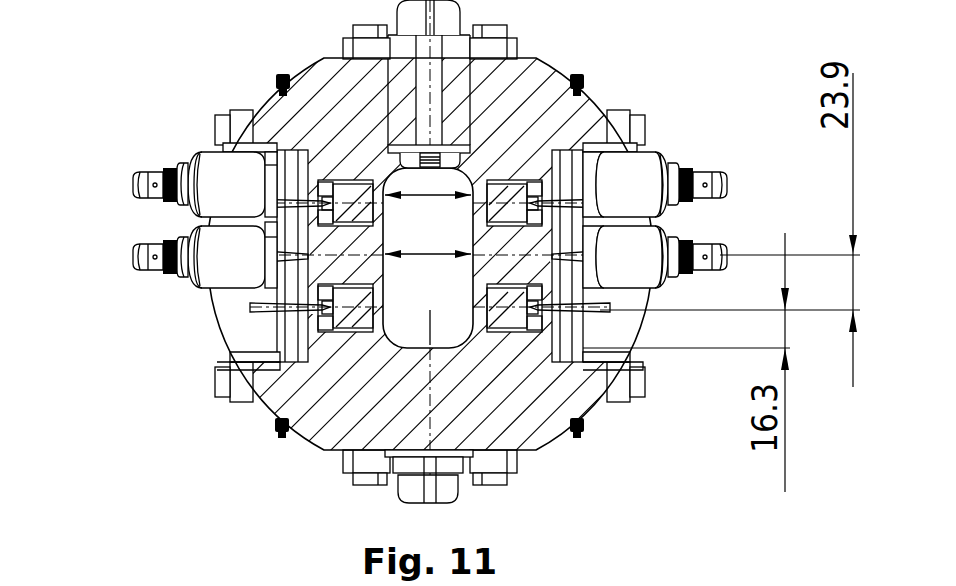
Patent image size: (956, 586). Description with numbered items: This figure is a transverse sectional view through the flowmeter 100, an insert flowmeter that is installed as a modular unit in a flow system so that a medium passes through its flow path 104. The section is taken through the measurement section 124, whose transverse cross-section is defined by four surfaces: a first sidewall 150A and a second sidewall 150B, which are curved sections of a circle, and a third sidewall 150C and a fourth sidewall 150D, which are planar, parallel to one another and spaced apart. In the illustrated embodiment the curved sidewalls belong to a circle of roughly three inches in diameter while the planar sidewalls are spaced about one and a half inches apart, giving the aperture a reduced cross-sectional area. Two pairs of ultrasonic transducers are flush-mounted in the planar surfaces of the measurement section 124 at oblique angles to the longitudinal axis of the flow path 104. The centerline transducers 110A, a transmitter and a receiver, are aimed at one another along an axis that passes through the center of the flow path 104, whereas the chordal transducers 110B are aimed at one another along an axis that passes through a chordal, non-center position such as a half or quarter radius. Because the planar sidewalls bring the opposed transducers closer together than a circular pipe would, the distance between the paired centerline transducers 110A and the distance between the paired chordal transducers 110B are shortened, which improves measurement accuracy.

The flowmeter 100 is at (478, 293).
The flow path 104 is at (429, 273).
The measurement section 124 is at (365, 326).
The first sidewall 150A is at (366, 90).
The second sidewall 150B is at (451, 443).
The third sidewall 150C is at (251, 317).
The fourth sidewall 150D is at (583, 354).
The centerline transducers 110A is at (408, 232).
The chordal transducers 110B is at (428, 155).